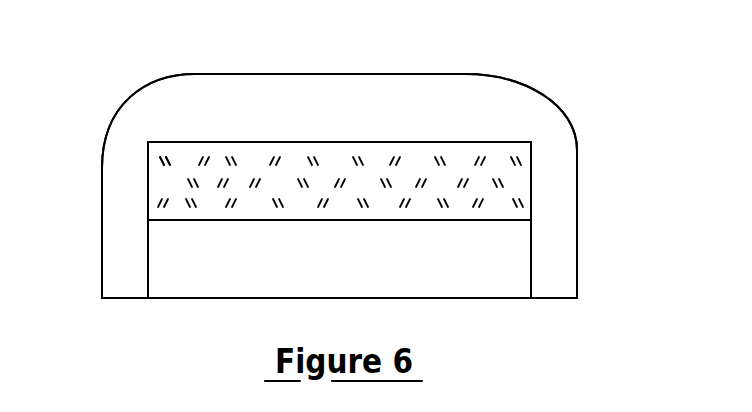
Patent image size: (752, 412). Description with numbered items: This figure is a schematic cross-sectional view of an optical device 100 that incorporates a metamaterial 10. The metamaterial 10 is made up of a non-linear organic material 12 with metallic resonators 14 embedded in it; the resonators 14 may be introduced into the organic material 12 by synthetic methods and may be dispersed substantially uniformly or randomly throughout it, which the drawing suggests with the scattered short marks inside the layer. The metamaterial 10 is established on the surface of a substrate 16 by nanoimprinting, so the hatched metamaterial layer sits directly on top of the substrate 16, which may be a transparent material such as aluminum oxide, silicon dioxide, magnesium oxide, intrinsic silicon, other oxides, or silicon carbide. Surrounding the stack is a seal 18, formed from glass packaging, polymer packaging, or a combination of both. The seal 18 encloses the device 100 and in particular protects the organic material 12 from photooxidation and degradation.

The optical device 100 is at (566, 72).
The seal 18 is at (190, 98).
The substrate 16 is at (235, 272).
The non-linear organic material 12 is at (375, 155).
The metallic resonators 14 is at (188, 183).
The metamaterial 10 is at (531, 178).